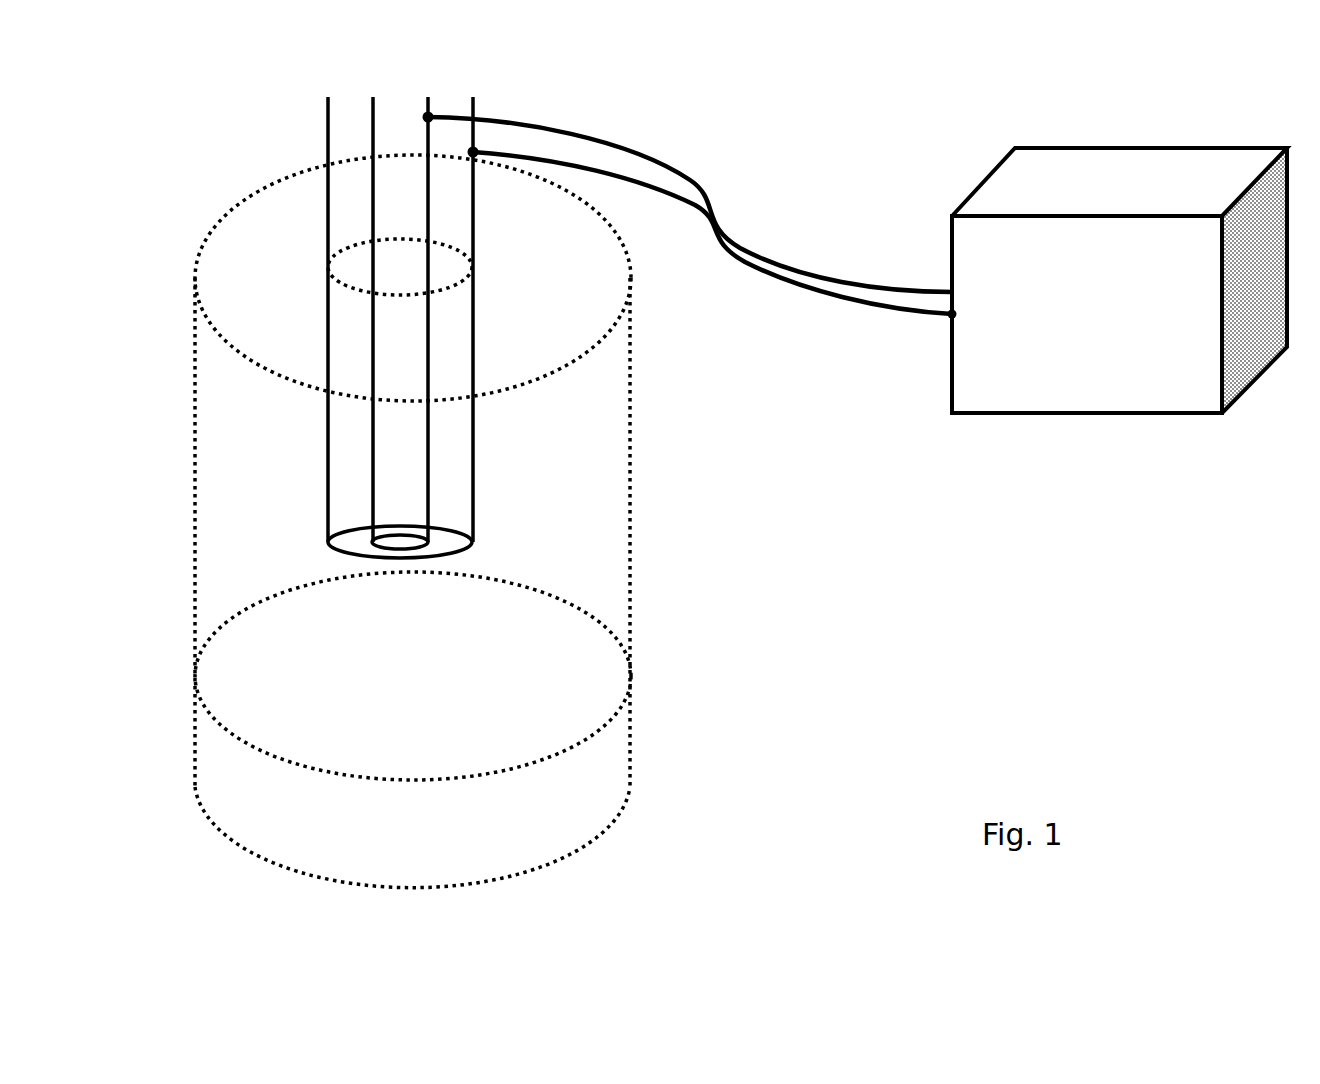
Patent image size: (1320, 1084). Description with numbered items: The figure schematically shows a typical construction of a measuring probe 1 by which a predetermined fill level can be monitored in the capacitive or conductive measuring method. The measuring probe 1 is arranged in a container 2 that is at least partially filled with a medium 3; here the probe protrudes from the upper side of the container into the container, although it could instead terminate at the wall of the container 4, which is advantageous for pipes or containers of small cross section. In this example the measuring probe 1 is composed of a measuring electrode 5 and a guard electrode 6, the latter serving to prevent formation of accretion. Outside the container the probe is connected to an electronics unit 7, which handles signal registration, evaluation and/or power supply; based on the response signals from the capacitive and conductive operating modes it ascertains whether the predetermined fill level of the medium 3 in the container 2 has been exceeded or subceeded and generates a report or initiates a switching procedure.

The measuring probe 1 is at (459, 466).
The container 2 is at (195, 392).
The medium 3 is at (217, 742).
The wall of the container 4 is at (203, 278).
The measuring electrode 5 is at (398, 362).
The guard electrode 6 is at (477, 463).
The electronics unit 7 is at (1164, 357).